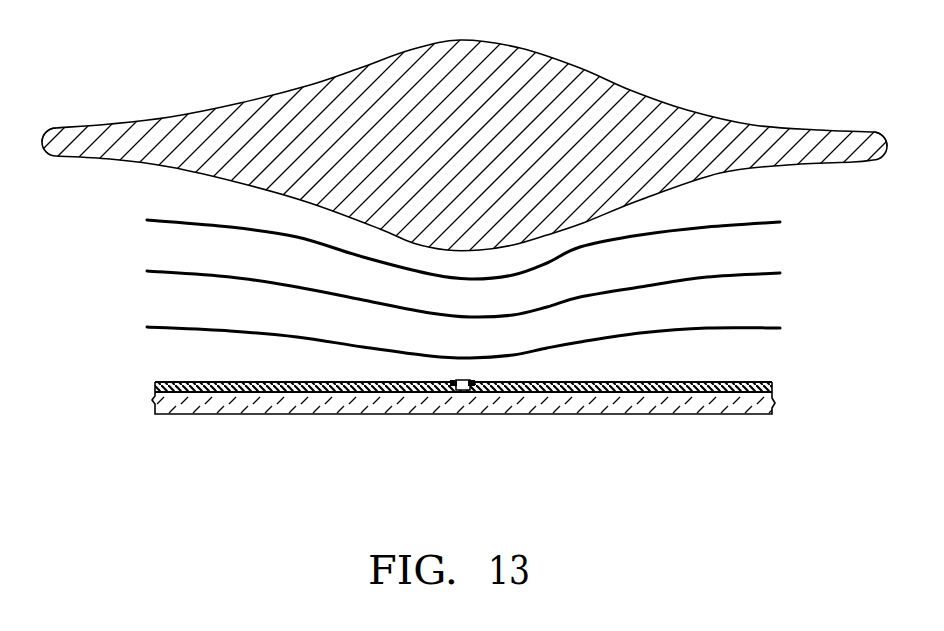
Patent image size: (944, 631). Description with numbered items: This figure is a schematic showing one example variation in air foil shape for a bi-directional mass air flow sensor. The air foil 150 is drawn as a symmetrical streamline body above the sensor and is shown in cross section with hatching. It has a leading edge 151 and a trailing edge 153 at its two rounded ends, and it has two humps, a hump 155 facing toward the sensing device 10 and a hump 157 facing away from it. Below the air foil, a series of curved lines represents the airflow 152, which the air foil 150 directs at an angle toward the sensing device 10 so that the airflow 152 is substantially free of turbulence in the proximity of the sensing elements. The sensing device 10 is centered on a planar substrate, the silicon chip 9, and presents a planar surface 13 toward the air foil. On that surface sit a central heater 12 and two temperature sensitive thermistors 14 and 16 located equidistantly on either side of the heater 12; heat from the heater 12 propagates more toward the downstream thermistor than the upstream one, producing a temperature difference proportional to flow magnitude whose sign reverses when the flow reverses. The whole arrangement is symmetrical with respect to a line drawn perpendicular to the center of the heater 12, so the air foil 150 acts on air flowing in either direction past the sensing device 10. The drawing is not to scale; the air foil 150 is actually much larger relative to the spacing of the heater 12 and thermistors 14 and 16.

The silicon chip 9 is at (157, 387).
The sensing device 10 is at (243, 414).
The heater 12 is at (465, 387).
The planar surface 13 is at (752, 382).
The thermistor 14 is at (452, 386).
The thermistor 16 is at (471, 386).
The air foil 150 is at (574, 98).
The leading edge 151 is at (57, 140).
The airflow 152 is at (148, 212).
The trailing edge 153 is at (870, 145).
The hump 155 is at (427, 227).
The hump 157 is at (435, 68).